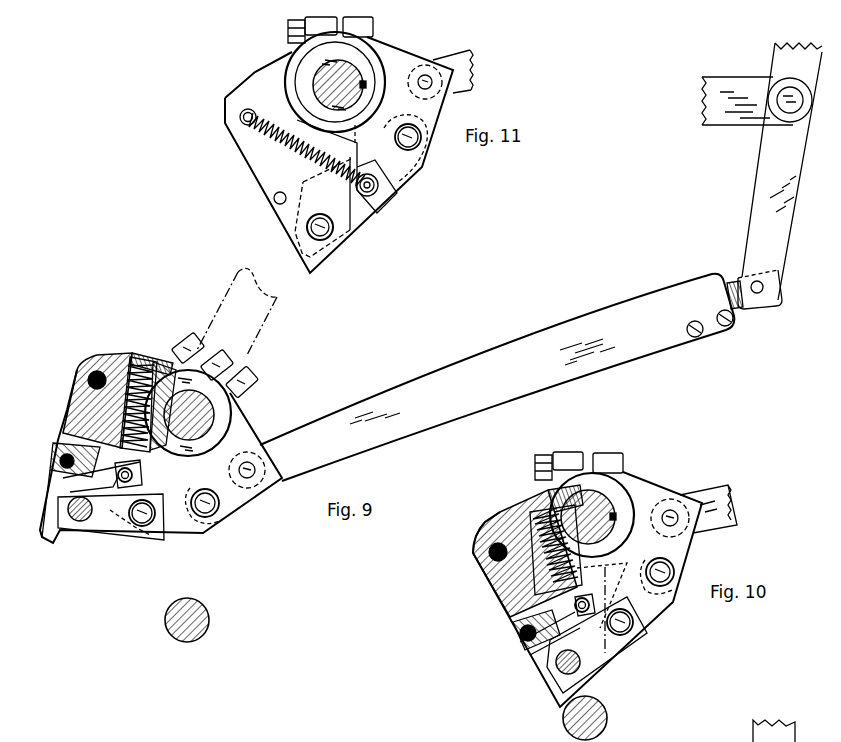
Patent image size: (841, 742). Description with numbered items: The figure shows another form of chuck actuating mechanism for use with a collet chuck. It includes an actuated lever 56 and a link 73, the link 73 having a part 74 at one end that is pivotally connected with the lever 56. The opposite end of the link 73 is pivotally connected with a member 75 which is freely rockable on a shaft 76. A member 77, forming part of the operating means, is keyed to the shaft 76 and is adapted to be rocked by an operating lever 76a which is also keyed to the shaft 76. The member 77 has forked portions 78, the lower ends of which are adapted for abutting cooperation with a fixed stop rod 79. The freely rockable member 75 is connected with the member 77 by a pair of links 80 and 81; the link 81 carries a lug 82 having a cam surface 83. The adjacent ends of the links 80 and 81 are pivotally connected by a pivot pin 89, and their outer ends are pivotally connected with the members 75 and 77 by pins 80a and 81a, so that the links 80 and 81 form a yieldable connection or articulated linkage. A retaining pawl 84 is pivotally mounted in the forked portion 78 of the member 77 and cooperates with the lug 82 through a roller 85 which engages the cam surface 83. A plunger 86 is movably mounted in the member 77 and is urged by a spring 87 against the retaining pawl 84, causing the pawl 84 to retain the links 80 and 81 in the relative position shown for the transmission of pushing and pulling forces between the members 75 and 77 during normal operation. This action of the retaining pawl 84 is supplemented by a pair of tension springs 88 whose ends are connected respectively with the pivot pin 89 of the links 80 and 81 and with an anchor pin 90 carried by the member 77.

In FIG. 9, the actuated lever 56 is at (760, 203).
In FIG. 9, the link 73 is at (504, 358).
In FIG. 10, the link 73 is at (720, 487).
In FIG. 9, the part 74 is at (746, 309).
In FIG. 11, the freely rockable member 75 is at (397, 57).
In FIG. 9, the freely rockable member 75 is at (243, 425).
In FIG. 10, the freely rockable member 75 is at (643, 492).
In FIG. 9, the shaft 76 is at (245, 386).
In FIG. 9, the operating lever 76a is at (257, 310).
In FIG. 11, the member 77 is at (263, 78).
In FIG. 9, the member 77 is at (113, 356).
In FIG. 10, the member 77 is at (490, 537).
In FIG. 9, the forked portions 78 is at (52, 530).
In FIG. 9, the fixed stop rod 79 is at (168, 607).
In FIG. 10, the fixed stop rod 79 is at (607, 707).
In FIG. 11, the link 80 is at (395, 170).
In FIG. 9, the link 80 is at (180, 527).
In FIG. 10, the link 80 is at (657, 603).
In FIG. 9, the pin 80a is at (225, 511).
In FIG. 10, the pin 80a is at (680, 572).
In FIG. 11, the link 81 is at (360, 217).
In FIG. 9, the link 81 is at (120, 533).
In FIG. 10, the link 81 is at (592, 655).
In FIG. 9, the pin 81a is at (85, 523).
In FIG. 10, the pin 81a is at (560, 673).
In FIG. 9, the lug 82 is at (62, 440).
In FIG. 9, the cam surface 83 is at (97, 476).
In FIG. 9, the retaining pawl 84 is at (120, 412).
In FIG. 9, the roller 85 is at (140, 473).
In FIG. 9, the plunger 86 is at (80, 372).
In FIG. 9, the spring 87 is at (146, 368).
In FIG. 11, the tension springs 88 is at (303, 173).
In FIG. 11, the pivot pin 89 is at (380, 190).
In FIG. 9, the pivot pin 89 is at (143, 526).
In FIG. 10, the pivot pin 89 is at (633, 627).
In FIG. 11, the anchor pin 90 is at (240, 114).